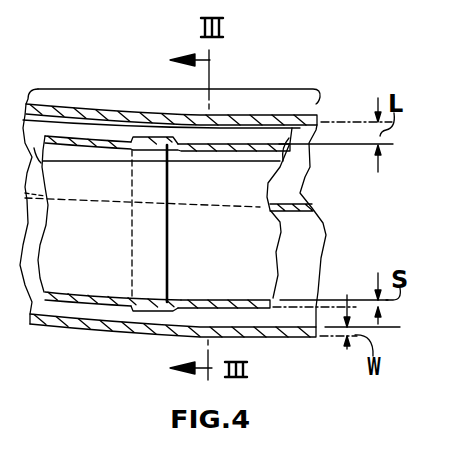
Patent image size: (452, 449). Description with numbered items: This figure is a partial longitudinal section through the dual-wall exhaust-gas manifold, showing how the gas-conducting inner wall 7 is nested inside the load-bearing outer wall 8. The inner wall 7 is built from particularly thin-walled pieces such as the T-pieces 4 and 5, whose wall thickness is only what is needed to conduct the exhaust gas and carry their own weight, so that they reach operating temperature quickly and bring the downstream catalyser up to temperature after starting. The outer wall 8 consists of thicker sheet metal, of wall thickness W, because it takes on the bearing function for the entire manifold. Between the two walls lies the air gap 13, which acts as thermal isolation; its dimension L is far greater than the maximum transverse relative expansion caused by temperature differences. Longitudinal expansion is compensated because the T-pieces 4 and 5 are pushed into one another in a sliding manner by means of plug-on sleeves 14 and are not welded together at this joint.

The T-piece 4 is at (97, 304).
The T-piece 5 is at (259, 303).
The inner wall 7 is at (185, 161).
The outer wall 8 is at (153, 89).
The air gap 13 is at (298, 113).
The plug-on sleeve 14 is at (175, 313).